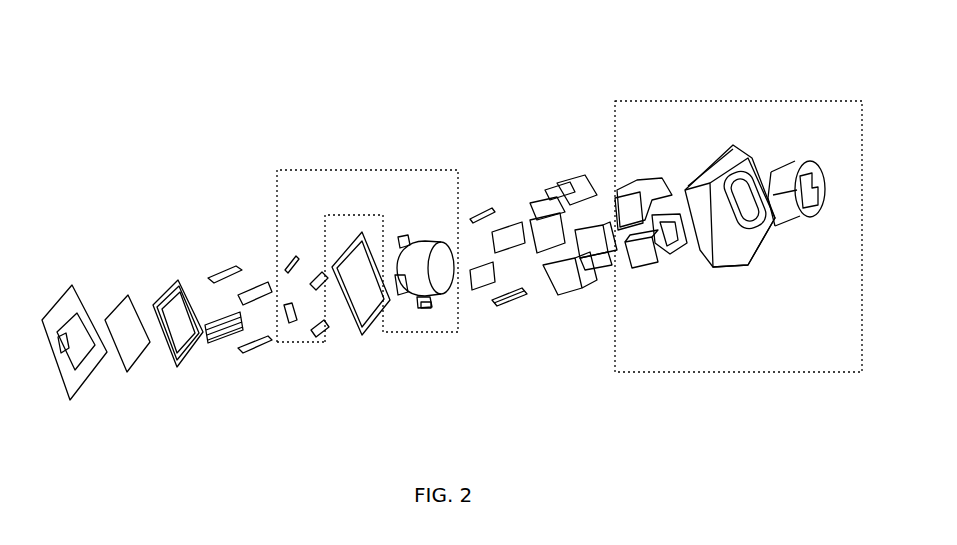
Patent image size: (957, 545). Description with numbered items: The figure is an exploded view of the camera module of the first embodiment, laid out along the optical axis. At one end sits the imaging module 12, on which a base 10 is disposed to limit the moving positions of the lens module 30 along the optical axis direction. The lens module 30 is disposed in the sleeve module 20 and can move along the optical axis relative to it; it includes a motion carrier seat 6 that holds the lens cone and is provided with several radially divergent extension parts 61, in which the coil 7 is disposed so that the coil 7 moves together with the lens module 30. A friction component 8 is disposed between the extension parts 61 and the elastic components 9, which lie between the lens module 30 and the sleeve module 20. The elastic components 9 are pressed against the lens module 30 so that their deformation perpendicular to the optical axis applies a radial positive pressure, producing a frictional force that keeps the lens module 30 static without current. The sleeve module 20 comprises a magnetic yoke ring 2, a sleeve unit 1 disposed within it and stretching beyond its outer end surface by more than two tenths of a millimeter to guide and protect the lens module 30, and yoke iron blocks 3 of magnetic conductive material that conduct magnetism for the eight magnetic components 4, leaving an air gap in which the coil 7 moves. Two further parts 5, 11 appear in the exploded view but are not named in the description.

The sleeve unit 1 is at (806, 237).
The magnetic yoke ring 2 is at (740, 263).
The yoke iron blocks 3 is at (660, 282).
The magnetic component 4 is at (588, 308).
The plates 5 is at (505, 310).
The motion carrier seat 6 is at (433, 318).
The extension parts 61 is at (427, 308).
The coil 7 is at (372, 338).
The friction component 8 is at (318, 342).
The elastic components 9 is at (248, 355).
The base 10 is at (188, 368).
The plate 11 is at (128, 378).
The imaging module 12 is at (75, 405).
The sleeve module 20 is at (757, 101).
The lens module 30 is at (458, 170).